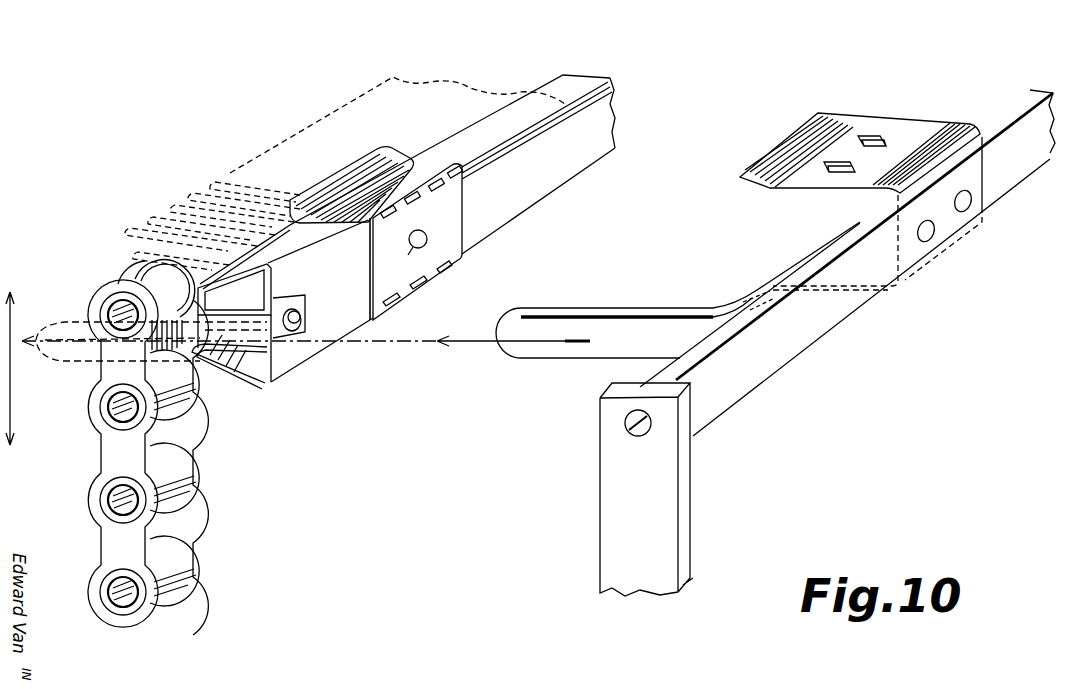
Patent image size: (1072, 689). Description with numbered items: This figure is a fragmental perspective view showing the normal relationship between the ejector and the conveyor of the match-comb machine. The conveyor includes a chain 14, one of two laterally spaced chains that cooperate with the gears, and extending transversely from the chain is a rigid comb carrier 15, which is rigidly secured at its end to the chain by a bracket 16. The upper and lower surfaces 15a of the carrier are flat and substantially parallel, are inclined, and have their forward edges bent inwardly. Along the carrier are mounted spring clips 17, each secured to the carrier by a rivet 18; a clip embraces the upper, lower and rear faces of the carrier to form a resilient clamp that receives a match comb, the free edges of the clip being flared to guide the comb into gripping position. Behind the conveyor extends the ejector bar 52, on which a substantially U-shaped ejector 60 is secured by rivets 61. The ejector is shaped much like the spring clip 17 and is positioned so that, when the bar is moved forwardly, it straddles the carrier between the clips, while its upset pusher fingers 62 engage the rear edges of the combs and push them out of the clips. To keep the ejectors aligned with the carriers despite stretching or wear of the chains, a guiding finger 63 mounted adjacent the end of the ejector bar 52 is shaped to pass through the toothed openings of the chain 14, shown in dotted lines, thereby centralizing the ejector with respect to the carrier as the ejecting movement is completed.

The chain 14 is at (172, 593).
The comb carrier 15 is at (520, 200).
The surfaces of the carrier 15a is at (518, 96).
The bracket 16 is at (293, 342).
The spring clip 17 is at (455, 207).
The rivet 18 is at (408, 254).
The ejector bar 52 is at (793, 342).
The ejector 60 is at (908, 127).
The rivet 61 is at (930, 236).
The pusher finger 62 is at (843, 162).
The guiding finger 63 is at (76, 356).